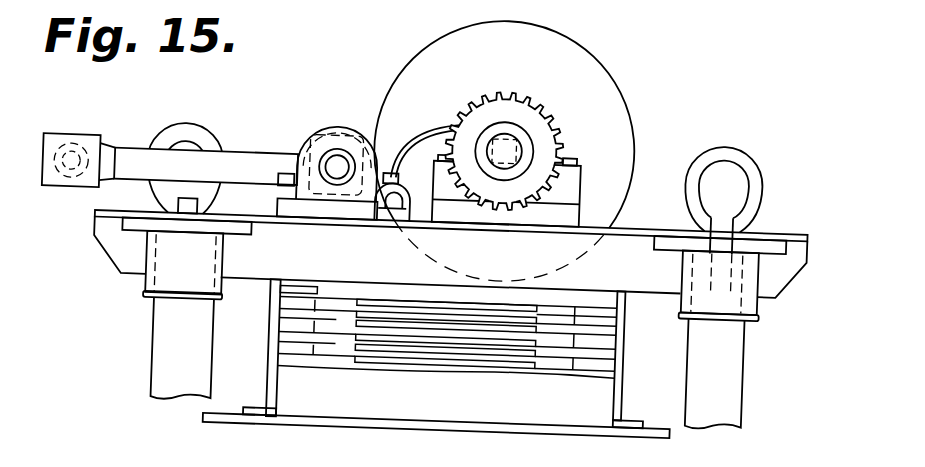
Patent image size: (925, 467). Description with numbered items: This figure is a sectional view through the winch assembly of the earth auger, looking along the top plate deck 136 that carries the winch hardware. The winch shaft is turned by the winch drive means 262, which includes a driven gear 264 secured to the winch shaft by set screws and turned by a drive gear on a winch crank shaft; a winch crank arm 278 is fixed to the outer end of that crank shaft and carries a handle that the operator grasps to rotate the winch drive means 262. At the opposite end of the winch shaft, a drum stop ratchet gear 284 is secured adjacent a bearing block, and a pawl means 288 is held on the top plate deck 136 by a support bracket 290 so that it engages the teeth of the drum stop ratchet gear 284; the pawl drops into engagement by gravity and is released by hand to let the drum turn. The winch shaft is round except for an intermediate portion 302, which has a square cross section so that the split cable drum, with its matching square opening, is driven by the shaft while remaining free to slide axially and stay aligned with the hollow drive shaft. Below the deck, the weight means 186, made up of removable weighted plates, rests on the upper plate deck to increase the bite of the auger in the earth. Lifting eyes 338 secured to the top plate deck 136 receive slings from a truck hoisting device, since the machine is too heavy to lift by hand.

The top plate deck 136 is at (783, 211).
The weight means 186 is at (416, 368).
The winch drive means 262 is at (290, 126).
The driven gear 264 is at (604, 54).
The winch crank arm 278 is at (140, 156).
The drum stop ratchet gear 284 is at (530, 113).
The pawl means 288 is at (430, 125).
The support bracket 290 is at (405, 211).
The intermediate portion 302 is at (508, 136).
The lifting eyes 338 is at (731, 133).